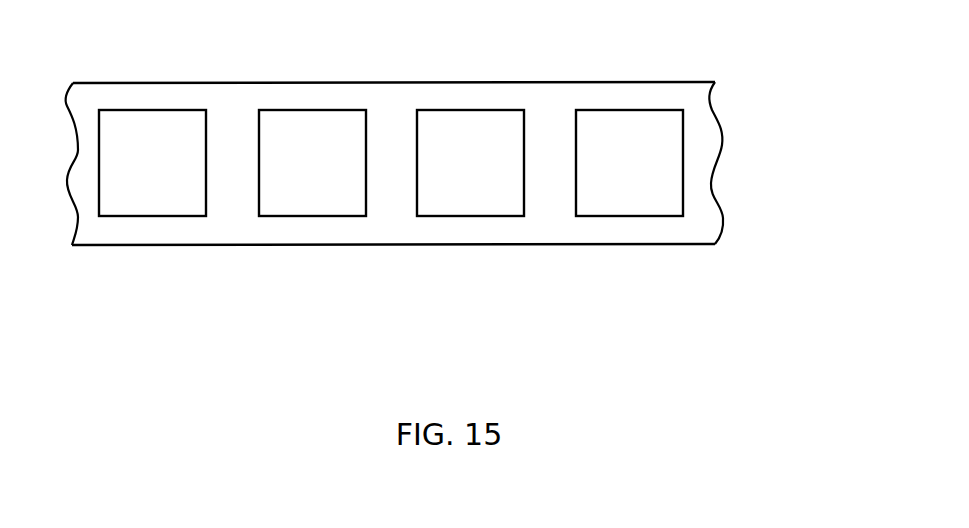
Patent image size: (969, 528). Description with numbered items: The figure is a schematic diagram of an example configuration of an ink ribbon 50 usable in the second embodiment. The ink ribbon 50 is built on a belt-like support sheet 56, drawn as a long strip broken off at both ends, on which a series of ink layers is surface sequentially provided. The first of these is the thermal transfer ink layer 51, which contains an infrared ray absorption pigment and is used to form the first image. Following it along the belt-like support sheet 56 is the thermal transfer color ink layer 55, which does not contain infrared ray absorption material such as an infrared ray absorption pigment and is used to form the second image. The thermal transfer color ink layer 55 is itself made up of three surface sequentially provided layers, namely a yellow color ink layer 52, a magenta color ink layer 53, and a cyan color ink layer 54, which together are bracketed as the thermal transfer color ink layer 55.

The ink ribbon 50 is at (750, 182).
The thermal transfer ink layer 51 is at (153, 202).
The yellow color ink layer 52 is at (314, 203).
The magenta color ink layer 53 is at (472, 202).
The cyan color ink layer 54 is at (640, 202).
The thermal transfer color ink layer 55 is at (652, 326).
The belt-like support sheet 56 is at (640, 97).